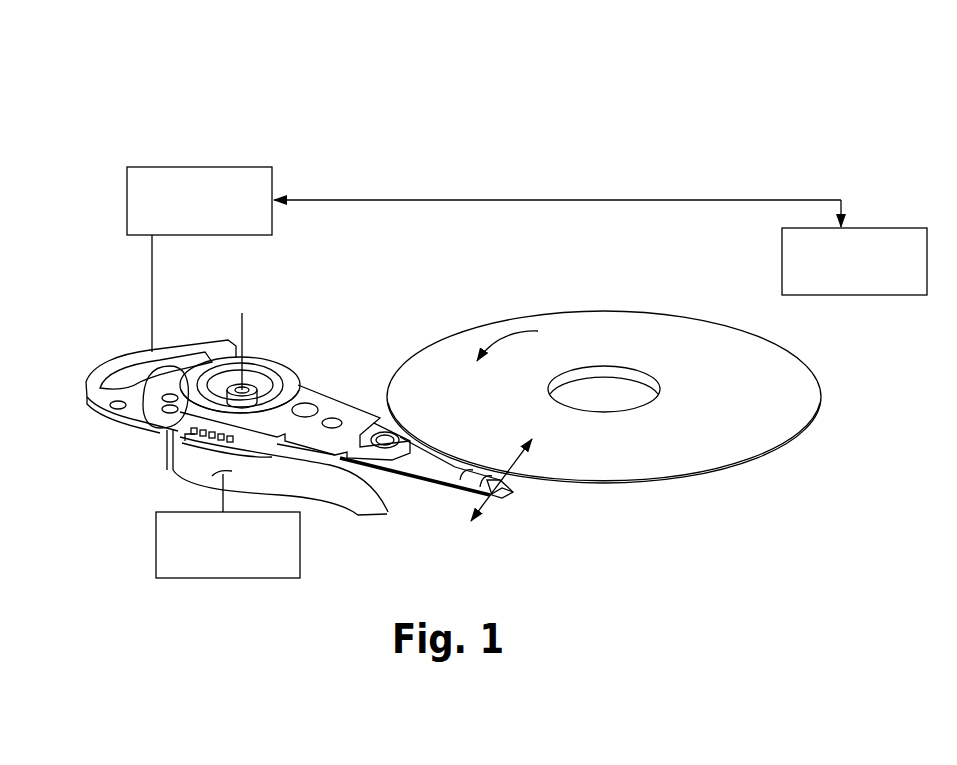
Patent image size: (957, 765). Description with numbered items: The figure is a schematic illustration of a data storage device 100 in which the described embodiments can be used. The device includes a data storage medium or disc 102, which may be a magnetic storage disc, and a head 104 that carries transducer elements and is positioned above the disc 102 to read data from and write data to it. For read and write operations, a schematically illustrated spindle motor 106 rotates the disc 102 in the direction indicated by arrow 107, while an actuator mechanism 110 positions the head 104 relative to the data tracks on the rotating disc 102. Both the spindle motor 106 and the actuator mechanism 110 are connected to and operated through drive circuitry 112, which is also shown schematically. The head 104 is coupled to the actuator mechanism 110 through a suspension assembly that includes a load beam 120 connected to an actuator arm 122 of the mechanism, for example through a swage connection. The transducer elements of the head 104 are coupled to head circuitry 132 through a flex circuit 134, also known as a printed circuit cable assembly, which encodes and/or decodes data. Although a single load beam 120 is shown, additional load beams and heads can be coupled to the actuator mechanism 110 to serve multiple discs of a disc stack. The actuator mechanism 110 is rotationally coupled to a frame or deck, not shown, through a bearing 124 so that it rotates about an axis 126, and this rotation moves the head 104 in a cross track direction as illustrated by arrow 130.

The data storage device 100 is at (739, 163).
The disc 102 is at (701, 345).
The head 104 is at (498, 498).
The spindle motor 106 is at (893, 227).
The arrow 107 is at (499, 338).
The actuator mechanism 110 is at (261, 346).
The drive circuitry 112 is at (242, 167).
The load beam 120 is at (418, 448).
The actuator arm 122 is at (337, 390).
The bearing 124 is at (233, 388).
The axis 126 is at (238, 333).
The arrow 130 is at (513, 475).
The head circuitry 132 is at (156, 545).
The flex circuit 134 is at (249, 481).